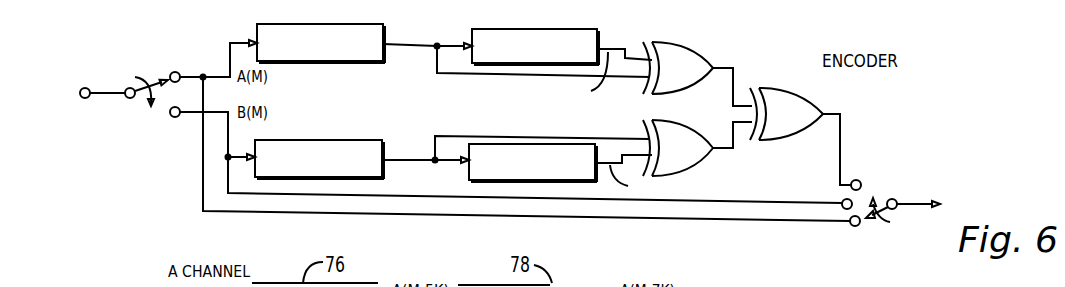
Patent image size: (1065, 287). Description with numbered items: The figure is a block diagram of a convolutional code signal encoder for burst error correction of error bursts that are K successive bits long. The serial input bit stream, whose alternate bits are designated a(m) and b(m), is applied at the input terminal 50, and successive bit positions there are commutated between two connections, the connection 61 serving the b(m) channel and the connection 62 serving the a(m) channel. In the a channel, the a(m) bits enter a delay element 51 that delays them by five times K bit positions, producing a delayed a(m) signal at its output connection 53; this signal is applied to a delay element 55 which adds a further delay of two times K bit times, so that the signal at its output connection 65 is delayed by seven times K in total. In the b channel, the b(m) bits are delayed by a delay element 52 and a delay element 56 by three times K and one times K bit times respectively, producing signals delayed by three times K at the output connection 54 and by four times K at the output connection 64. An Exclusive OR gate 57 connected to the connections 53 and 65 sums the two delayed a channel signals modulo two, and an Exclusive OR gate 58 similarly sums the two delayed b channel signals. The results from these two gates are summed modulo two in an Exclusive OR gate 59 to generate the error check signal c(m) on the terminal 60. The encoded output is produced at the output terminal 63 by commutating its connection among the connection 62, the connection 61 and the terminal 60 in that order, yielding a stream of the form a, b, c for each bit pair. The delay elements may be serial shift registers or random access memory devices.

The input terminal 50 is at (102, 90).
The delay element 51 is at (363, 64).
The delay element 52 is at (324, 140).
The output connection 53 is at (412, 48).
The output connection 54 is at (418, 159).
The delay element 55 is at (492, 66).
The delay element 56 is at (506, 143).
The Exclusive OR gate 57 is at (689, 79).
The Exclusive OR gate 58 is at (689, 159).
The Exclusive OR gate 59 is at (803, 125).
The terminal 60 is at (843, 122).
The connection 61 is at (190, 116).
The connection 62 is at (194, 71).
The output terminal 63 is at (912, 201).
The output connection 64 is at (622, 153).
The output connection 65 is at (625, 62).